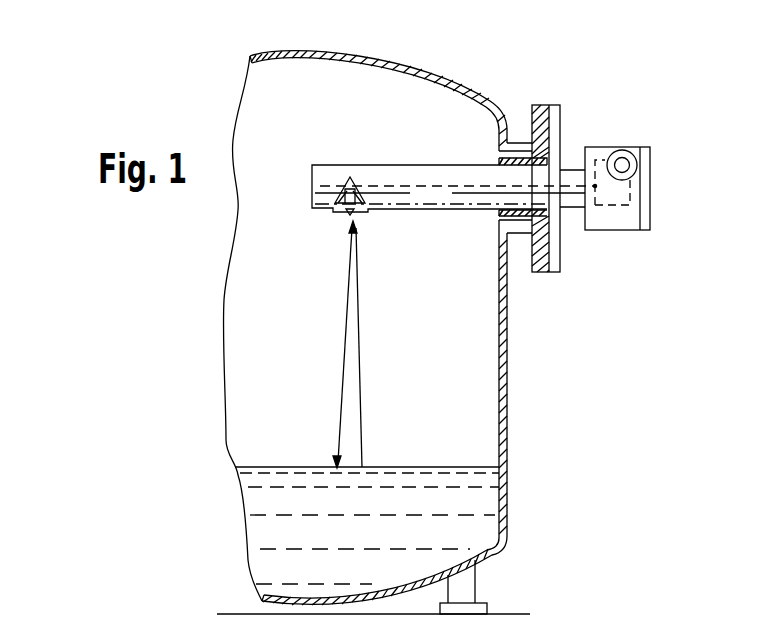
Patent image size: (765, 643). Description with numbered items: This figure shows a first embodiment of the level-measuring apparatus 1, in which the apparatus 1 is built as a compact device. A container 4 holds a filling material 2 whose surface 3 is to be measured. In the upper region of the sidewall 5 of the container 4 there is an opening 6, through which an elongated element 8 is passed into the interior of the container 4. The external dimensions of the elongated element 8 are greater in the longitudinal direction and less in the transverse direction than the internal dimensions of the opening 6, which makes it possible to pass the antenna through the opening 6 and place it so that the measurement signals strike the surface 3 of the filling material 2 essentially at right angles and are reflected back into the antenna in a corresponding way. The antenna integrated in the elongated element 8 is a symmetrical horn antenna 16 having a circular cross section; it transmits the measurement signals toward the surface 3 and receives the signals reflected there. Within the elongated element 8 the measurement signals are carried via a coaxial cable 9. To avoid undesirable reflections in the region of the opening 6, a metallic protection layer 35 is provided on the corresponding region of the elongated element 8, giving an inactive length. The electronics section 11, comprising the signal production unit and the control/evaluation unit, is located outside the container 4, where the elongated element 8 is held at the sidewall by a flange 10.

The apparatus 1 is at (516, 89).
The filling material 2 is at (480, 505).
The surface of the filling material 3 is at (443, 468).
The container 4 is at (400, 343).
The sidewall 5 is at (507, 360).
The opening 6 is at (523, 222).
The elongated element 8 is at (388, 177).
The coaxial cable 9 is at (430, 186).
The flange 10 is at (552, 138).
The electronics section 11 is at (618, 197).
The symmetrical horn antenna 16 is at (345, 214).
The metallic protection layer 35 is at (497, 214).